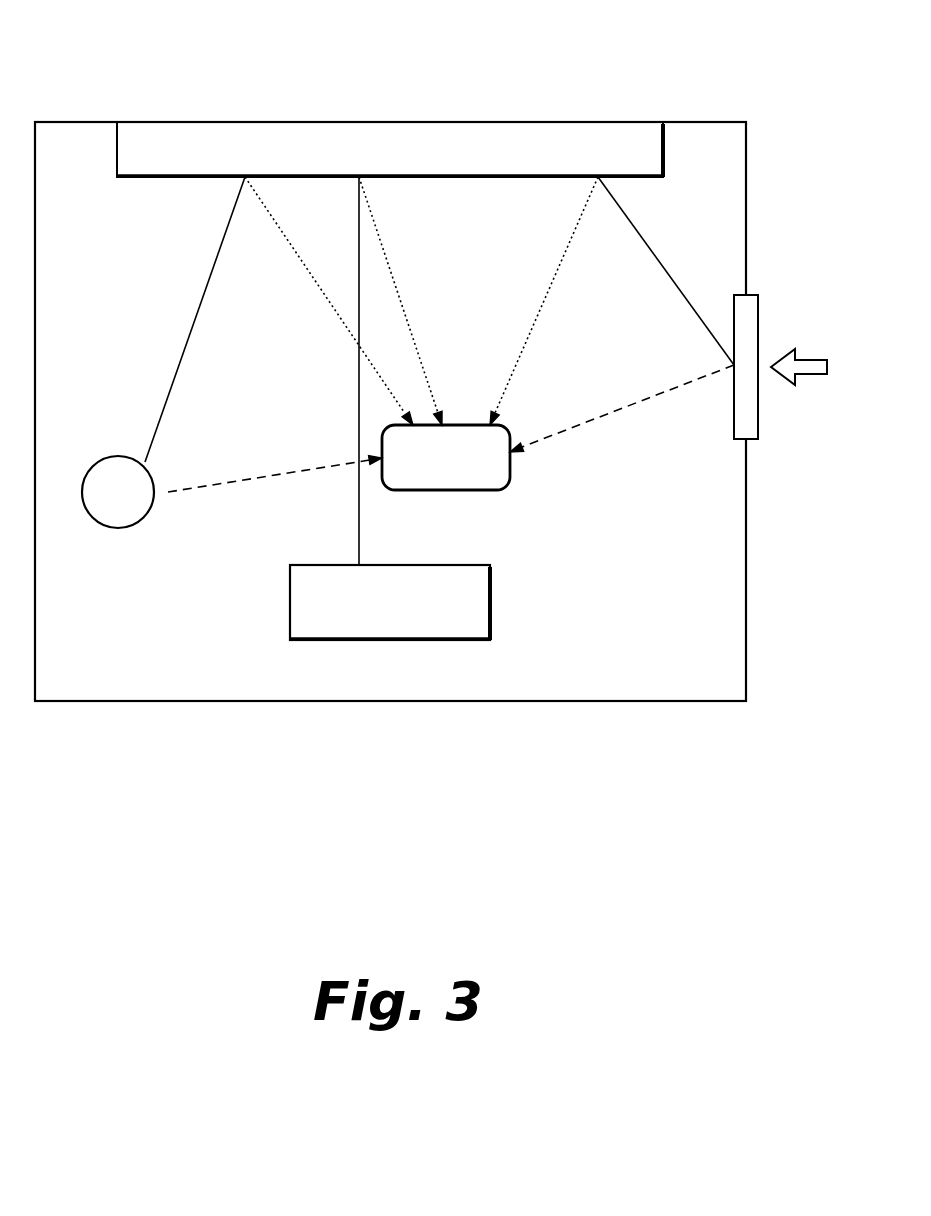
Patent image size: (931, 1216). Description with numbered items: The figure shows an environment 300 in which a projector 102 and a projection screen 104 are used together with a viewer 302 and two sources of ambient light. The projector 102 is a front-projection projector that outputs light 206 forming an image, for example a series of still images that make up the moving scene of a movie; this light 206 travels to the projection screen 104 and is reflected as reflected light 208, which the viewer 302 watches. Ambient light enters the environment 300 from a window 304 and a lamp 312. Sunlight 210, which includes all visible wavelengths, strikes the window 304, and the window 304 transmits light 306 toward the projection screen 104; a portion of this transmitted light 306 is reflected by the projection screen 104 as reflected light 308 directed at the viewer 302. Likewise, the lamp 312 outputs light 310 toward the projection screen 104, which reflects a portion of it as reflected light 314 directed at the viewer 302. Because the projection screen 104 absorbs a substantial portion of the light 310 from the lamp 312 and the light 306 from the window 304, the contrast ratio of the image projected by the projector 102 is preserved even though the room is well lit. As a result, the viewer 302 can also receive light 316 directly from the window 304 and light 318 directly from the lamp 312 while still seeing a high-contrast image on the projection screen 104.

The environment 300 is at (168, 40).
The projection screen 104 is at (390, 149).
The projector 102 is at (390, 602).
The light 206 is at (359, 526).
The viewer 302 is at (446, 457).
The reflected light 314 is at (273, 217).
The reflected light 208 is at (397, 287).
The reflected light 308 is at (572, 243).
The light 310 is at (197, 317).
The light 306 is at (713, 337).
The lamp 312 is at (118, 492).
The light 318 is at (338, 462).
The window 304 is at (747, 295).
The light 316 is at (677, 390).
The sunlight 210 is at (797, 360).